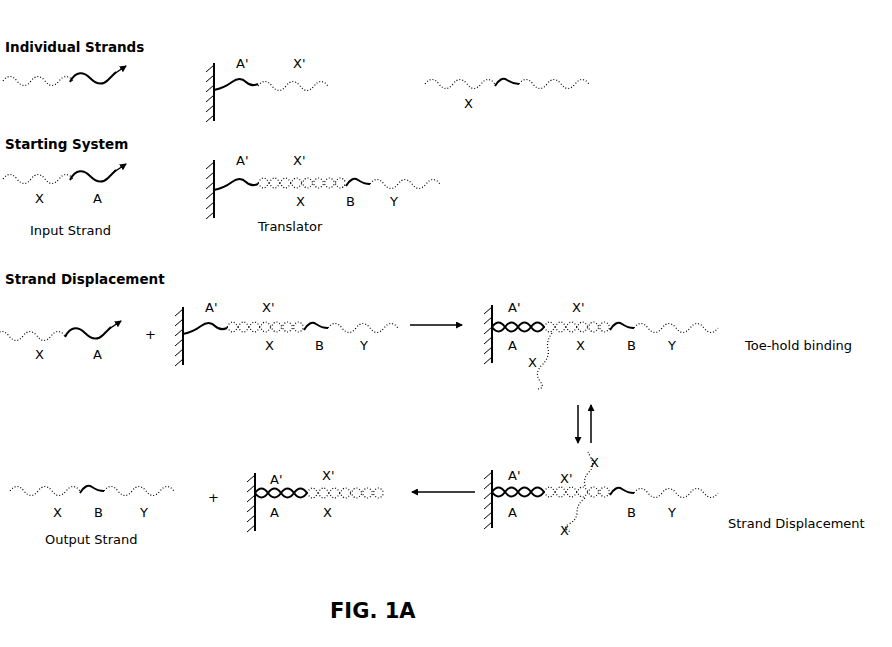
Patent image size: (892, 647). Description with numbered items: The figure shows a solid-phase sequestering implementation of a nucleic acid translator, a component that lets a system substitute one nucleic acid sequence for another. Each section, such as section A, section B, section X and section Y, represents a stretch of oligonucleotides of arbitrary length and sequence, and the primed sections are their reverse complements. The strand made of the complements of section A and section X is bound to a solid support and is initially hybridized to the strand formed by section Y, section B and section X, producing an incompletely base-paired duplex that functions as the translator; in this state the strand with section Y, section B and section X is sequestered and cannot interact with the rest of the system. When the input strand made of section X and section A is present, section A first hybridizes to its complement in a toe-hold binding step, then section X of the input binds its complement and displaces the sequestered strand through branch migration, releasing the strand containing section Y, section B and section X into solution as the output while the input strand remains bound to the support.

The oligonucleotide section X is at (38, 93).
The oligonucleotide section A is at (98, 87).
The oligonucleotide section B is at (507, 95).
The oligonucleotide section Y is at (554, 96).